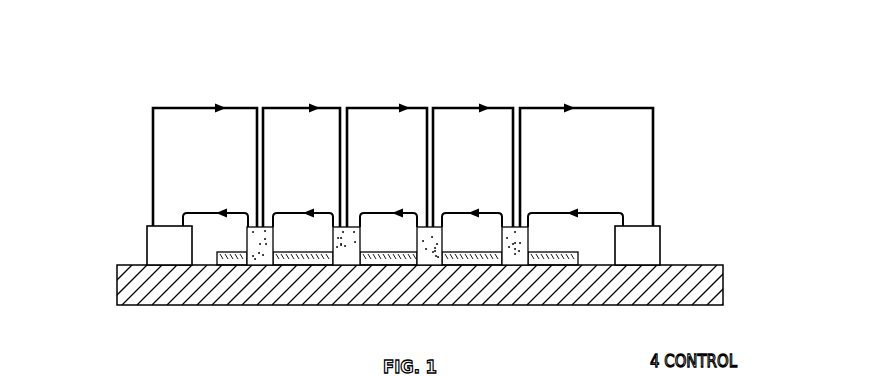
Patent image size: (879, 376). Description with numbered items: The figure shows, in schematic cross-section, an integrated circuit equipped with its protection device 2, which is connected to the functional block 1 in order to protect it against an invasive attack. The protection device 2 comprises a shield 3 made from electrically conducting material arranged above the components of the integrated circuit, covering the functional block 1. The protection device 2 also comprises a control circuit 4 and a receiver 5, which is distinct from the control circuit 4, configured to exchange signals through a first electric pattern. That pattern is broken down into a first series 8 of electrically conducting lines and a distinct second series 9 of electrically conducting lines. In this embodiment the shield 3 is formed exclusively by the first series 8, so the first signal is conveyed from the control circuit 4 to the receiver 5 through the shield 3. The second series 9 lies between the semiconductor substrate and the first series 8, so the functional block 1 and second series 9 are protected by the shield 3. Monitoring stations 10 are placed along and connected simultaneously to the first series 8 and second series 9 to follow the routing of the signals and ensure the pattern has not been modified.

The functional block 1 is at (560, 258).
The protection device 2 is at (672, 108).
The shield 3 is at (142, 93).
The control circuit 4 is at (163, 226).
The receiver 5 is at (650, 226).
The first series 8 is at (655, 176).
The second series 9 is at (241, 212).
The monitoring station 10 is at (275, 236).